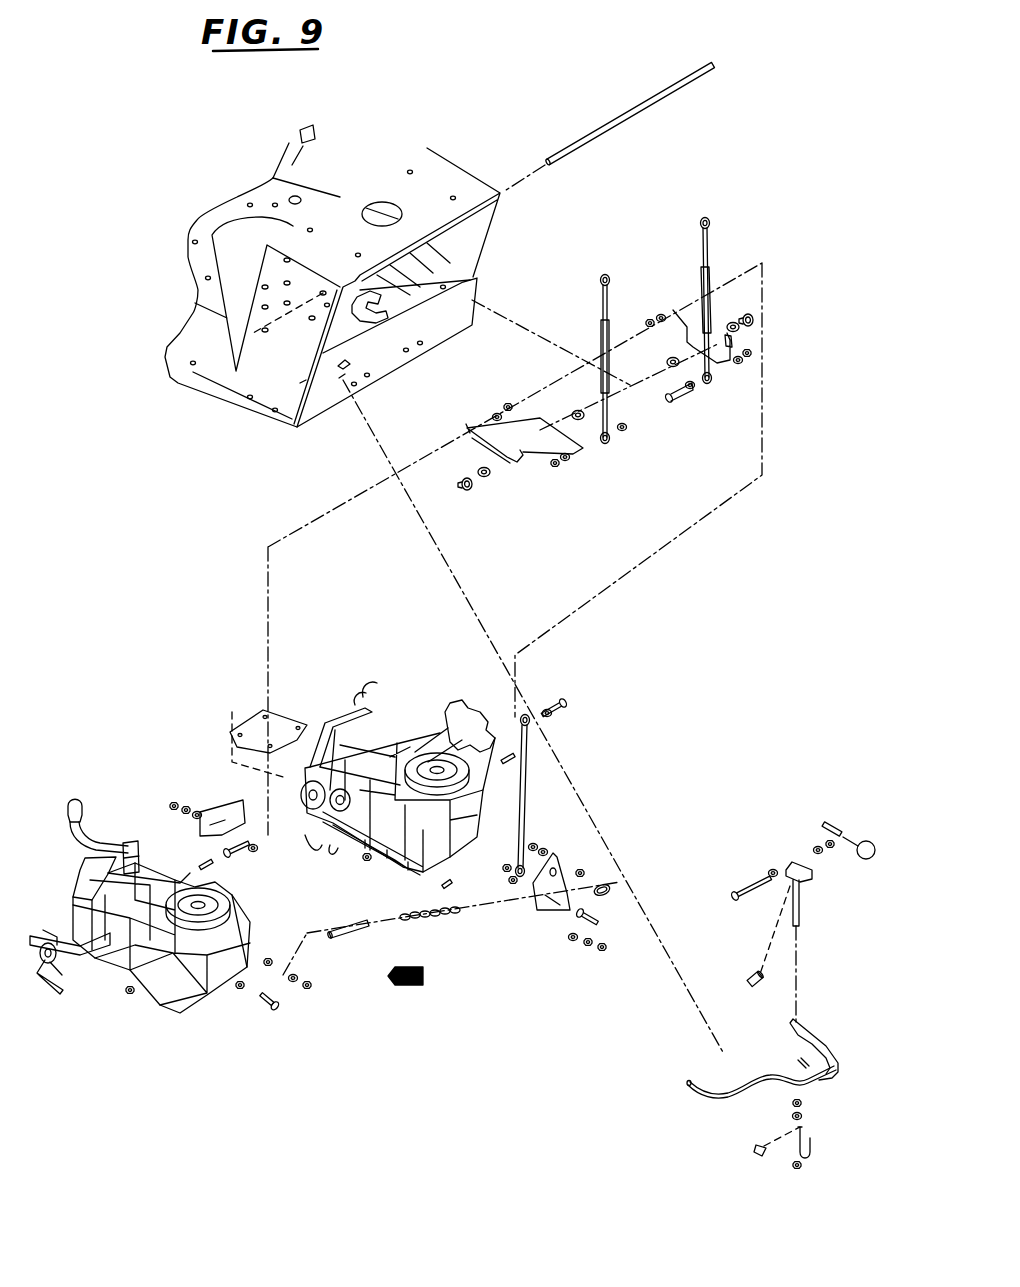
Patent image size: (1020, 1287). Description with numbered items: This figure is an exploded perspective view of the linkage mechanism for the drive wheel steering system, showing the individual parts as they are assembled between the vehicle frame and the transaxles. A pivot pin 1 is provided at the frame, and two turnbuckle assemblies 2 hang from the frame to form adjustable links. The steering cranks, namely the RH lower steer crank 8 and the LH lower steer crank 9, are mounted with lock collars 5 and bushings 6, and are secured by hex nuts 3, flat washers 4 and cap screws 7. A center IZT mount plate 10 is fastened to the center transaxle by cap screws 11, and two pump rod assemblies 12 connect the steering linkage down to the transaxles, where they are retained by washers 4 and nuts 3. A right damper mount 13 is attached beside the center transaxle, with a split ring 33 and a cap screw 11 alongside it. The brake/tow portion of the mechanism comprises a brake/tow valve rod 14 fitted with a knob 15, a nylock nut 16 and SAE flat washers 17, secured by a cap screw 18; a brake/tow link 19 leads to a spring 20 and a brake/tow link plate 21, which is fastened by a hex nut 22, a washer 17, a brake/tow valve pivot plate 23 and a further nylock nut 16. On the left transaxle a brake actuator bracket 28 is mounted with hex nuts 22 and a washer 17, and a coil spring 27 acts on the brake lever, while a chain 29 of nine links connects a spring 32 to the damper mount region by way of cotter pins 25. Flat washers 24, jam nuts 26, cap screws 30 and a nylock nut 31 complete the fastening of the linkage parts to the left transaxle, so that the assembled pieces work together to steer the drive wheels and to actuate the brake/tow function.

The pivot pin 1 is at (580, 131).
The turnbuckle assembly 2 is at (700, 220).
The hex nut 3 is at (648, 318).
The flat washer 4 is at (662, 313).
The lock collar 5 is at (752, 314).
The bushing 6 is at (733, 321).
The cap screw 7 is at (676, 406).
The RH lower steer crank 8 is at (737, 341).
The LH lower steer crank 9 is at (462, 425).
The center IZT mount plate 10 is at (258, 710).
The cap screw 11 is at (218, 852).
The pump rod assembly 12 is at (535, 728).
The right damper mount 13 is at (537, 913).
The brake/tow valve rod 14 is at (825, 818).
The knob 15 is at (866, 838).
The nylock nut 16 is at (831, 851).
The SAE flat washer 17 is at (198, 808).
The cap screw 18 is at (733, 888).
The brake/tow link 19 is at (664, 974).
The spring 20 is at (745, 1030).
The brake/tow link plate 21 is at (684, 1083).
The hex nut 22 is at (185, 803).
The brake/tow valve pivot plate 23 is at (751, 1146).
The flat washer 24 is at (238, 991).
The cotter pin 25 is at (442, 886).
The jam nut 26 is at (125, 995).
The coil spring 27 is at (307, 845).
The brake actuator bracket 28 is at (195, 823).
The chain 29 is at (445, 920).
The cap screw 30 is at (270, 1012).
The nylock nut 31 is at (312, 992).
The spring 32 is at (360, 932).
The split ring 33 is at (613, 885).